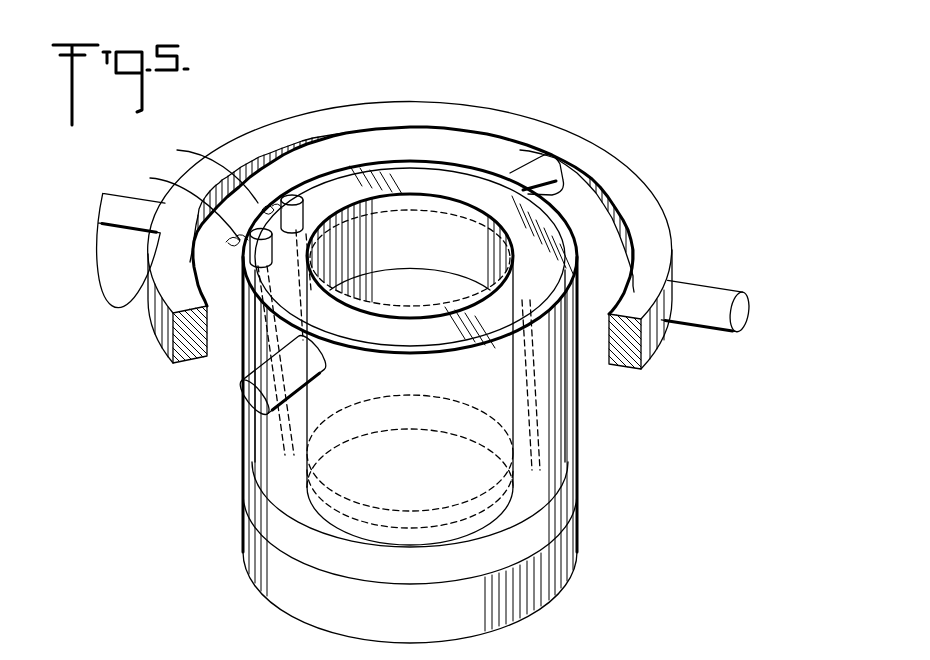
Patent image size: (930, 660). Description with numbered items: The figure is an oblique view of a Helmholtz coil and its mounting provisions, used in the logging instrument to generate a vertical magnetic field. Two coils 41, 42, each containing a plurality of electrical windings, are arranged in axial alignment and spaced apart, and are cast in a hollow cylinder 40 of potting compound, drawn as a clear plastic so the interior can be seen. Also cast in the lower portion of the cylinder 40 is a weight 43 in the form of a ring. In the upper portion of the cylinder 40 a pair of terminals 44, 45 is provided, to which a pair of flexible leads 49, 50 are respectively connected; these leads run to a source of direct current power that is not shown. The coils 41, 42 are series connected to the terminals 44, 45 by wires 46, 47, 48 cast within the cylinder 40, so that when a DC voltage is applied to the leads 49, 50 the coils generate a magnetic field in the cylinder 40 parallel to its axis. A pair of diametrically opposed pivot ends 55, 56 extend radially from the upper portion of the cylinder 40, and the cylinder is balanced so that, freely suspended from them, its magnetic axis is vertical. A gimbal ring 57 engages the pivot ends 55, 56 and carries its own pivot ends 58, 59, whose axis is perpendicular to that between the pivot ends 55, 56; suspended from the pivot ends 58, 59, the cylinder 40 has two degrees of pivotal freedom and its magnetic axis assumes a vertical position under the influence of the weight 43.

The hollow cylinder 40 is at (578, 440).
The coil 41 is at (443, 230).
The coil 42 is at (453, 408).
The weight 43 is at (578, 548).
The terminal 44 is at (294, 195).
The terminal 45 is at (250, 252).
The wire 46 is at (310, 218).
The wire 47 is at (262, 431).
The wire 48 is at (532, 400).
The flexible lead 49 is at (188, 151).
The flexible lead 50 is at (152, 178).
The pivot end 55 is at (548, 170).
The pivot end 56 is at (242, 397).
The gimbal ring 57 is at (420, 100).
The pivot end 58 is at (723, 293).
The pivot end 59 is at (135, 238).